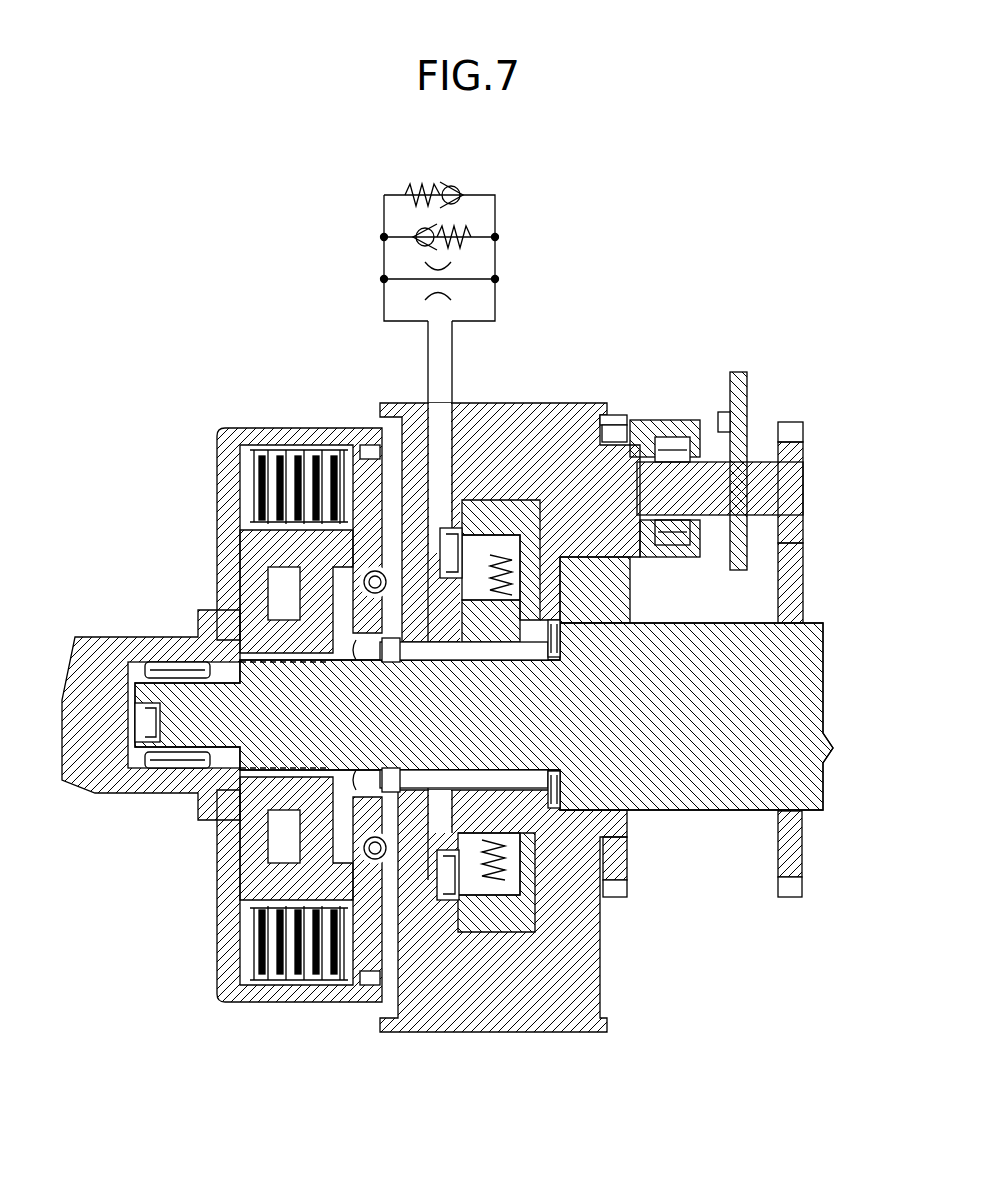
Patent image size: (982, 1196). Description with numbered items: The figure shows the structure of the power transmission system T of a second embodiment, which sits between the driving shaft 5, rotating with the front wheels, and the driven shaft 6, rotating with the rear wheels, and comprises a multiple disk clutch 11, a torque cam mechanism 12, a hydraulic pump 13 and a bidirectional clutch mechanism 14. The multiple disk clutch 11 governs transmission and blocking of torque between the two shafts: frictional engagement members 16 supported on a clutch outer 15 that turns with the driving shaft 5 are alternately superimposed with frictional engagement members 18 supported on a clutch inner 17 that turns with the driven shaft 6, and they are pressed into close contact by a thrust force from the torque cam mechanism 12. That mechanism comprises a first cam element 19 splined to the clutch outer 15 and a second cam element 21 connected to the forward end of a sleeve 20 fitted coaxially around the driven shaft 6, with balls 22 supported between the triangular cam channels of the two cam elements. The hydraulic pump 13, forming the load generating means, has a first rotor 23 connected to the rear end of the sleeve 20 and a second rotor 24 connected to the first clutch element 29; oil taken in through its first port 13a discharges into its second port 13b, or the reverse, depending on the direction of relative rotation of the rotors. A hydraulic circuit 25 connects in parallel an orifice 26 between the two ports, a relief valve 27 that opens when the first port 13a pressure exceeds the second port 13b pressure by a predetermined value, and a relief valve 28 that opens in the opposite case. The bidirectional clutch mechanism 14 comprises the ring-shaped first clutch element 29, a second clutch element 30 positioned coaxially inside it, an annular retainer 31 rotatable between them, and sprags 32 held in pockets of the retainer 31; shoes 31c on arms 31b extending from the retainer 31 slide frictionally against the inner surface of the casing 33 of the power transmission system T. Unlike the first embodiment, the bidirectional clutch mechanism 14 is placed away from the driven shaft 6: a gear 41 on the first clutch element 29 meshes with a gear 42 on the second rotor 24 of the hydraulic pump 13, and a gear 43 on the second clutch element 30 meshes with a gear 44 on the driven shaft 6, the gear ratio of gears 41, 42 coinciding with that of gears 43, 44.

The power transmission system T is at (252, 480).
The driving shaft 5 is at (85, 670).
The driven shaft 6 is at (590, 730).
The multiple disk clutch 11 is at (293, 902).
The torque cam mechanism 12 is at (385, 910).
The hydraulic pump 13 is at (603, 628).
The first port 13a is at (506, 522).
The second port 13b is at (460, 875).
The bidirectional clutch mechanism 14 is at (693, 464).
The clutch outer 15 is at (222, 572).
The frictional engagement members 16 is at (300, 450).
The clutch inner 17 is at (284, 775).
The frictional engagement members 18 is at (286, 575).
The first cam element 19 is at (356, 652).
The sleeve 20 is at (440, 660).
The second cam element 21 is at (387, 652).
The balls 22 is at (378, 568).
The first rotor 23 is at (503, 660).
The second rotor 24 is at (472, 545).
The hydraulic circuit 25 is at (508, 262).
The orifice 26 is at (449, 290).
The relief valve 27 is at (447, 190).
The relief valve 28 is at (420, 233).
The first clutch element 29 is at (642, 440).
The second clutch element 30 is at (676, 458).
The retainer 31 is at (708, 530).
The arms 31b is at (726, 435).
The shoes 31c is at (782, 440).
The sprags 32 is at (618, 422).
The casing 33 is at (762, 553).
The gear 41 is at (608, 421).
The gear 42 is at (615, 893).
The gear 43 is at (790, 425).
The gear 44 is at (793, 893).